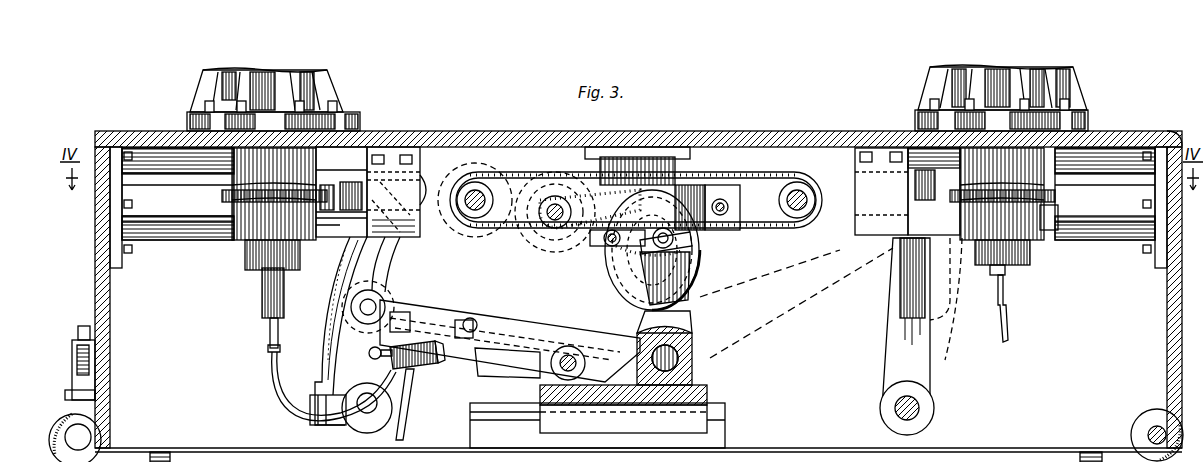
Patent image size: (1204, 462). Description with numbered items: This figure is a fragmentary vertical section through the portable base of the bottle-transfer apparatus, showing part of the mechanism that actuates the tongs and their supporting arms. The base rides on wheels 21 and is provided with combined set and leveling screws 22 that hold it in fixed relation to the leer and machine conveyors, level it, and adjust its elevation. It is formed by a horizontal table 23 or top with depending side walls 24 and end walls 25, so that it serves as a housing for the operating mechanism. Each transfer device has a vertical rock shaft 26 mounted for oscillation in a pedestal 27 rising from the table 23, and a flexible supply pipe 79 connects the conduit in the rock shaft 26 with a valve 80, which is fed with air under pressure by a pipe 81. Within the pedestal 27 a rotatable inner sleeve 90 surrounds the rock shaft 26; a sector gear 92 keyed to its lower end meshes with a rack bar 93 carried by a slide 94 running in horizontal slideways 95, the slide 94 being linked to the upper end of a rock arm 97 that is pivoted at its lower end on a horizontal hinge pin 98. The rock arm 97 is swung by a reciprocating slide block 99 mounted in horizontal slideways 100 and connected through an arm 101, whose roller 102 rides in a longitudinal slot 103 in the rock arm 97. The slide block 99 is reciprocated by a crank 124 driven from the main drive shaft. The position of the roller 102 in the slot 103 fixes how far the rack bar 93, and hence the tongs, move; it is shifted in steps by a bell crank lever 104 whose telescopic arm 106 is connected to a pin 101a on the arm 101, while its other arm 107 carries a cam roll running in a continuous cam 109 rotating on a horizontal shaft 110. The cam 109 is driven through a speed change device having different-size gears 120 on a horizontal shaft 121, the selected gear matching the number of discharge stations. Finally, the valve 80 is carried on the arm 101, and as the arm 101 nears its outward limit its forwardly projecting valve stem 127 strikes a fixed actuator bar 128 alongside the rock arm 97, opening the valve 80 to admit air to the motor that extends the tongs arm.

The wheels 21 is at (110, 450).
The combined set and leveling screws 22 is at (172, 452).
The horizontal table 23 is at (484, 131).
The side walls 24 is at (984, 440).
The end walls 25 is at (110, 330).
The vertical rock shaft 26 is at (265, 296).
The pedestal 27 is at (365, 102).
The flexible supply pipe 79 is at (292, 398).
The valve 80 is at (440, 368).
The pipe 81 is at (410, 418).
The inner sleeve 90 is at (1005, 270).
The sector gear 92 is at (245, 198).
The rack bar 93 is at (352, 178).
The slide 94 is at (1050, 230).
The horizontal slideways 95 is at (185, 178).
The rock arm 97 is at (339, 332).
The horizontal hinge pin 98 is at (360, 430).
The reciprocating slide block 99 is at (707, 388).
The horizontal slideways 100 is at (725, 432).
The arm 101 is at (495, 318).
The pin 101a is at (474, 318).
The roller 102 is at (385, 290).
The longitudinal slot 103 is at (430, 235).
The bell crank lever 104 is at (699, 307).
The telescopic arm 106 is at (555, 335).
The arm 107 is at (680, 336).
The continuous cam 109 is at (700, 250).
The horizontal shaft 110 is at (700, 236).
The gears 120 is at (552, 242).
The horizontal shaft 121 is at (725, 220).
The crank 124 is at (492, 378).
The valve stem 127 is at (366, 356).
The actuator bar 128 is at (330, 353).